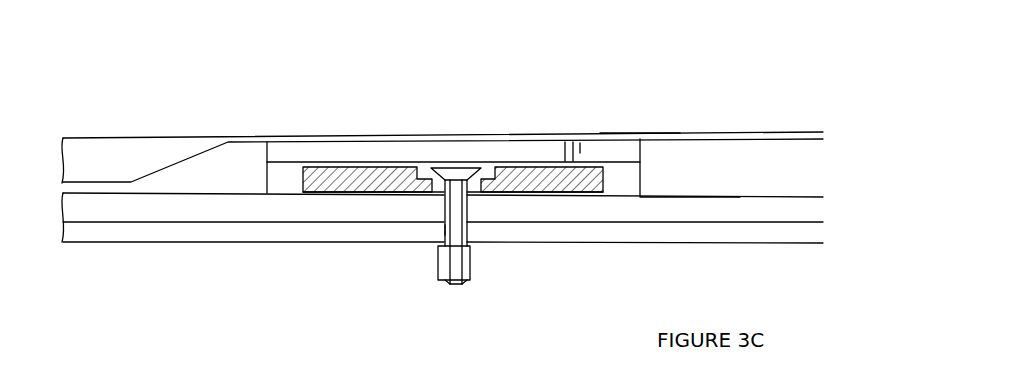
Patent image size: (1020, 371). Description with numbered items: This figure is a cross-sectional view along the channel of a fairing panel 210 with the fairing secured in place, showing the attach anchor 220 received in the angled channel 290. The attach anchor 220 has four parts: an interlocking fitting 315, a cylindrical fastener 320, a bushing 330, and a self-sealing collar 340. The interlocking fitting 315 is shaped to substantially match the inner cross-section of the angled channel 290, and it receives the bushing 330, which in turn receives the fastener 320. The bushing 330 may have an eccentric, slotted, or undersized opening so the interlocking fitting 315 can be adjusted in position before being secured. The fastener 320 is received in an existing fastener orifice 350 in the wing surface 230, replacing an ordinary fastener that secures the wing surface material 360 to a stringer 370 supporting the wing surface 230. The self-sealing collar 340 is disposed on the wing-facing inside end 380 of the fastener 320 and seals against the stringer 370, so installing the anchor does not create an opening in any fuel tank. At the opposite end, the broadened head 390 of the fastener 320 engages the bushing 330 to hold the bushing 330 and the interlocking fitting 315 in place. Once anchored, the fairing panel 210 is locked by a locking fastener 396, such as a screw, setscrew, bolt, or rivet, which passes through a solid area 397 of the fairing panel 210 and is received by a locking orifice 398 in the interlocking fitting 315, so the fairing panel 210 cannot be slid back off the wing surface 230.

The fairing panel 210 is at (103, 160).
The angled channel 290 is at (283, 178).
The attach anchor 220 is at (434, 207).
The wing surface material 360 is at (803, 214).
The stringer 370 is at (805, 239).
The interlocking fitting 315 is at (372, 160).
The locking orifice 398 is at (587, 197).
The broadened head 390 is at (467, 157).
The bushing 330 is at (490, 160).
The self-sealing collar 340 is at (470, 250).
The fastener orifice 350 is at (440, 233).
The cylindrical fastener 320 is at (448, 285).
The inside end 380 is at (460, 283).
The locking fastener 396 is at (581, 155).
The solid area 397 is at (643, 130).
The wing surface 230 is at (690, 200).